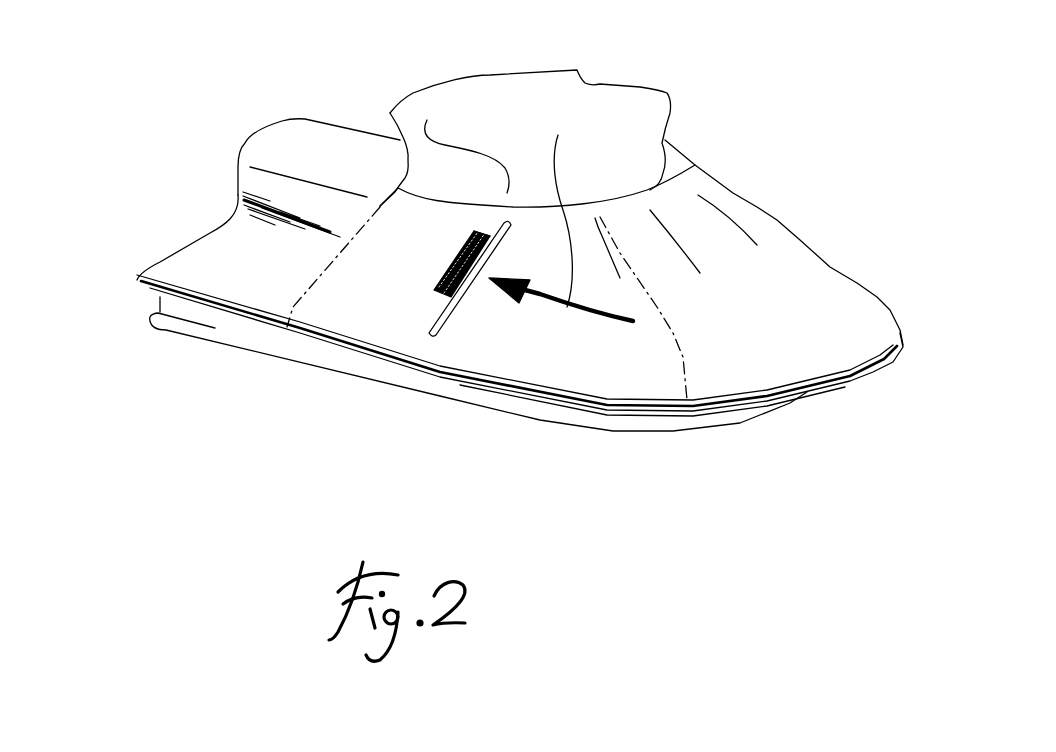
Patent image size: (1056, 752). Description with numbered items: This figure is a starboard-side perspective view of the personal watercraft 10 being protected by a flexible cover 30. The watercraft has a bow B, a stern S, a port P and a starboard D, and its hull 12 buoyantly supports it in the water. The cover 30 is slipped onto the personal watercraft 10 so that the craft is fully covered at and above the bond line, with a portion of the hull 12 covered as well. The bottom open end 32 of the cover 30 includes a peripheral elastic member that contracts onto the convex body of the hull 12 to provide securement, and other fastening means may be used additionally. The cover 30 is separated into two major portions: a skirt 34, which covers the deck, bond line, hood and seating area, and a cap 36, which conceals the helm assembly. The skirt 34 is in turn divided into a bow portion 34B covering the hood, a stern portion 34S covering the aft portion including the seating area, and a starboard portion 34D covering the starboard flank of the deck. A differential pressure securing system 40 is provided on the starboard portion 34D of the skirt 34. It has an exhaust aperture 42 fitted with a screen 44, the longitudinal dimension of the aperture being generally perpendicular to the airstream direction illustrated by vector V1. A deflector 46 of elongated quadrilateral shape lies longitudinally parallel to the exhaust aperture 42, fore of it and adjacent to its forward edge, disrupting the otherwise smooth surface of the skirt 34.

The personal watercraft 10 is at (845, 188).
The hull 12 is at (420, 388).
The cover 30 is at (224, 167).
The bottom open end 32 is at (517, 396).
The skirt 34 is at (326, 167).
The stern portion 34S is at (143, 277).
The starboard portion 34D is at (630, 370).
The bow portion 34B is at (800, 327).
The cap 36 is at (413, 107).
The differential pressure securing system 40 is at (422, 290).
The exhaust aperture 42 is at (447, 284).
The screen 44 is at (462, 255).
The deflector 46 is at (447, 317).
The port P is at (696, 138).
The vector V1 is at (565, 209).
The stern S is at (151, 231).
The starboard D is at (312, 320).
The bow B is at (929, 313).